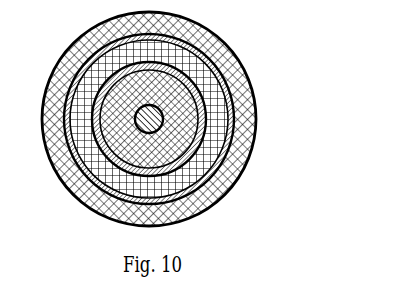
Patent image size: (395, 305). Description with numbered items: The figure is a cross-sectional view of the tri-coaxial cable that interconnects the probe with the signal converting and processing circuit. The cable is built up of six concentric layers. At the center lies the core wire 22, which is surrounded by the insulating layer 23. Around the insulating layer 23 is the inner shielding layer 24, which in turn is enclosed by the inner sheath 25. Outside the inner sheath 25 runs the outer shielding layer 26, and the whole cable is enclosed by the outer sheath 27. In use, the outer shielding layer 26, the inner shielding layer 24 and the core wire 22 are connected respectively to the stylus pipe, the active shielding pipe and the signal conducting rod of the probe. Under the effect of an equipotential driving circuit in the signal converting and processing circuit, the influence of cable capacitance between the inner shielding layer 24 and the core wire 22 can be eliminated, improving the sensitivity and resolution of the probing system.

The core wire 22 is at (150, 123).
The insulating layer 23 is at (182, 128).
The inner shielding layer 24 is at (204, 122).
The inner sheath 25 is at (216, 111).
The outer shielding layer 26 is at (223, 87).
The outer sheath 27 is at (230, 67).